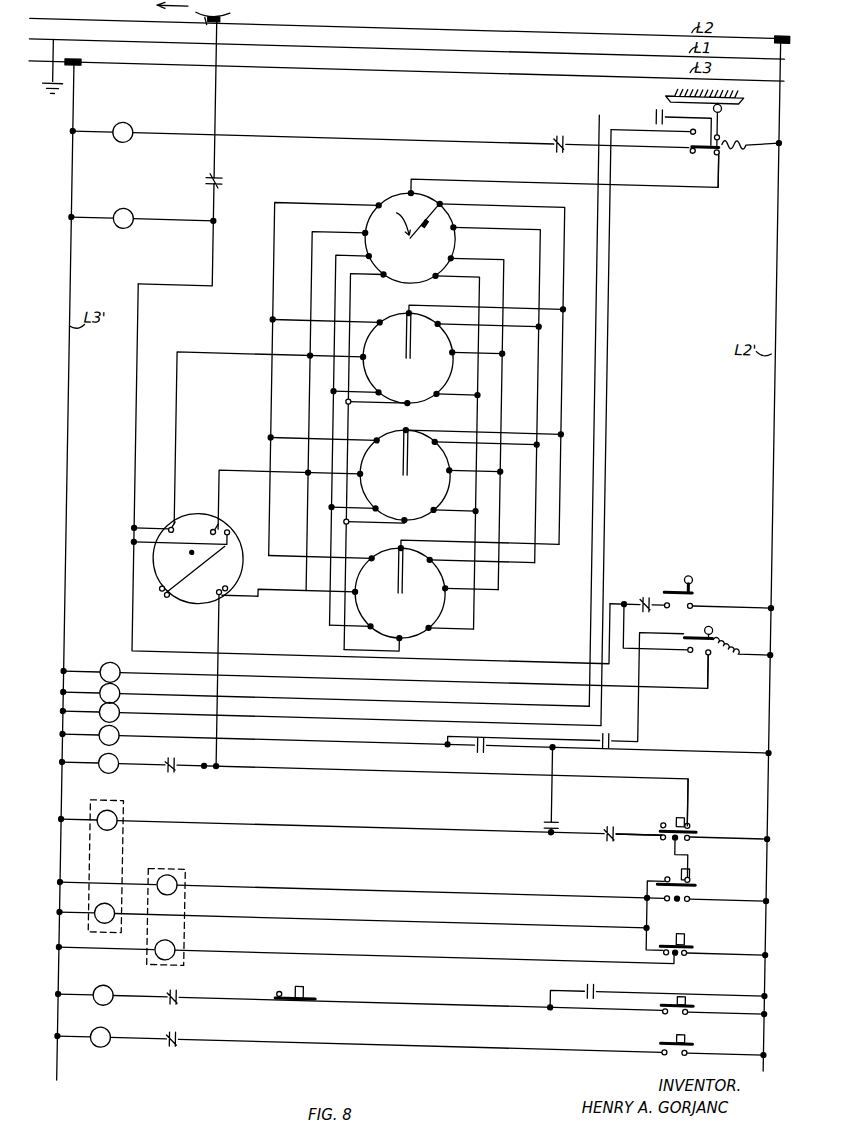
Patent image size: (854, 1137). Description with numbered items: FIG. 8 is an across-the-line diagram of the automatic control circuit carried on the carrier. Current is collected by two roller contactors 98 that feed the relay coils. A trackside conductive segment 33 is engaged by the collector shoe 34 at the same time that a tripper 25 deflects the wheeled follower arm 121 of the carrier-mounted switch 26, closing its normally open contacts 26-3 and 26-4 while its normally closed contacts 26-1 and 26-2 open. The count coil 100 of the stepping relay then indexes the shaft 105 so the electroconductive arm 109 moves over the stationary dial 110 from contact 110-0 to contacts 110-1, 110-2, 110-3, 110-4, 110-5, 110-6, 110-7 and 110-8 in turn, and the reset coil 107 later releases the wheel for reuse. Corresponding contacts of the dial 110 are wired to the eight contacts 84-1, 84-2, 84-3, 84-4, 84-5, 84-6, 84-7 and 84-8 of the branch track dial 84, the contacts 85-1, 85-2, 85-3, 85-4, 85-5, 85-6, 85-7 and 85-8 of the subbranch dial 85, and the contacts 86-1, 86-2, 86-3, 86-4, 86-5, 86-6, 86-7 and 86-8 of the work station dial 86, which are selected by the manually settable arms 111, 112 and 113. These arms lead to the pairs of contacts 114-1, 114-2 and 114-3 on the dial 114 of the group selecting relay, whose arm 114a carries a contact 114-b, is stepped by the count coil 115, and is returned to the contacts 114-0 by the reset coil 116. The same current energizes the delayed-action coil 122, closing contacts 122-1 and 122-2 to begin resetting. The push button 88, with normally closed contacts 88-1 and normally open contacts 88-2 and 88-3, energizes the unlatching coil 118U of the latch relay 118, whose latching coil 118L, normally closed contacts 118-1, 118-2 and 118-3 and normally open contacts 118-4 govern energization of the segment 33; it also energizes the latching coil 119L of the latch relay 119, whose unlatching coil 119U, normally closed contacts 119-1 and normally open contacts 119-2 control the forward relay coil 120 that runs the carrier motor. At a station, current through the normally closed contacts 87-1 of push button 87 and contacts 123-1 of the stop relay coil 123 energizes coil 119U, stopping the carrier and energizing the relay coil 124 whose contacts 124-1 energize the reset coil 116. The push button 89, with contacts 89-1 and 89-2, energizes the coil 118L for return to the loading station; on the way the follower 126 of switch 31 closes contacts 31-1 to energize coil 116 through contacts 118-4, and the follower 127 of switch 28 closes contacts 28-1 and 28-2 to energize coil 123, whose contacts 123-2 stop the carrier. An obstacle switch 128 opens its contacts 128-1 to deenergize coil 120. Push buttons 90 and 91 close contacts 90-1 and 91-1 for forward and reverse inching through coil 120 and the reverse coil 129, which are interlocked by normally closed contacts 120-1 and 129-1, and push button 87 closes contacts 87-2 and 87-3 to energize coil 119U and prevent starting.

The roller contactors 98 is at (82, 60).
The conductive segment 33 is at (200, 16).
The collector shoe 34 is at (226, 19).
The count coil 100 is at (135, 120).
The relay coil 122 is at (137, 222).
The normally closed contacts 118-1 is at (224, 176).
The normally closed contacts 118-3 is at (561, 119).
The stationary dial 110 is at (466, 233).
The electroconductive arm 109 is at (431, 221).
The central shaft 105 is at (394, 223).
The electrical contact 110-0 is at (412, 180).
The electrical contact 110-1 is at (445, 191).
The electrical contact 110-2 is at (461, 212).
The electrical contact 110-3 is at (457, 248).
The electrical contact 110-4 is at (441, 267).
The electrical contact 110-5 is at (388, 267).
The electrical contact 110-6 is at (376, 247).
The electrical contact 110-7 is at (367, 224).
The electrical contact 110-8 is at (375, 198).
The dial 84 is at (439, 387).
The contact arm 111 is at (417, 327).
The electrical contact 84-1 is at (432, 301).
The electrical contact 84-2 is at (446, 314).
The electrical contact 84-3 is at (458, 341).
The electrical contact 84-4 is at (443, 380).
The electrical contact 84-5 is at (416, 393).
The electrical contact 84-6 is at (386, 381).
The electrical contact 84-7 is at (370, 345).
The electrical contact 84-8 is at (386, 314).
The dial 85 is at (437, 511).
The contact arm 112 is at (414, 449).
The electrical contact 85-1 is at (409, 419).
The electrical contact 85-2 is at (442, 430).
The electrical contact 85-3 is at (456, 458).
The electrical contact 85-4 is at (442, 496).
The electrical contact 85-5 is at (398, 513).
The electrical contact 85-6 is at (382, 494).
The electrical contact 85-7 is at (369, 464).
The electrical contact 85-8 is at (384, 432).
The dial 86 is at (442, 623).
The contact arm 113 is at (416, 571).
The electrical contact 86-1 is at (406, 540).
The electrical contact 86-2 is at (439, 547).
The electrical contact 86-3 is at (454, 578).
The electrical contact 86-4 is at (438, 615).
The electrical contact 86-5 is at (412, 632).
The electrical contact 86-6 is at (382, 616).
The electrical contact 86-7 is at (366, 583).
The electrical contact 86-8 is at (382, 550).
The dial 114 is at (212, 506).
The pair of contacts 114-1 is at (176, 519).
The pair of contacts 114-2 is at (228, 521).
The electroconductive arm 114a is at (201, 547).
The contact 114-b is at (193, 572).
The pair of contacts 114-0 is at (176, 588).
The pair of contacts 114-3 is at (235, 588).
The stop relay coil 123 is at (132, 668).
The reset coil 107 is at (131, 690).
The count coil 115 is at (133, 709).
The reset coil 116 is at (133, 732).
The relay coil 124 is at (131, 768).
The normally open contacts 124-1 is at (495, 741).
The normally open contacts 118-4 is at (618, 718).
The normally closed contacts 119-1 is at (170, 749).
The normally open contacts 123-2 is at (557, 790).
The normally closed contacts 123-1 is at (618, 808).
The unlatching coil 119U is at (132, 815).
The latch type relay 119 is at (132, 850).
The latching coil 119L is at (110, 910).
The unlatching coil 118U is at (191, 874).
The latch type relay 118 is at (203, 907).
The latching coil 118L is at (192, 941).
The push button 87 is at (688, 799).
The normally closed contacts 87-1 is at (703, 804).
The normally open contacts 87-2 is at (674, 822).
The normally open contacts 87-3 is at (711, 821).
The push button 88 is at (704, 857).
The normally closed contacts 88-1 is at (662, 862).
The normally open contacts 88-2 is at (665, 883).
The normally open contacts 88-3 is at (706, 882).
The push button 89 is at (702, 921).
The normally open contacts 89-1 is at (706, 938).
The normally open contacts 89-2 is at (668, 938).
The motor control forward relay coil 120 is at (126, 991).
The normally closed contacts 129-1 is at (200, 990).
The switch 128 is at (318, 985).
The normally closed contacts 128-1 is at (296, 985).
The normally open contacts 119-2 is at (593, 970).
The push button 90 is at (680, 988).
The contacts 90-1 is at (704, 995).
The relay coil 129 is at (124, 1032).
The normally closed contacts 120-1 is at (200, 1030).
The push button 91 is at (680, 1024).
The contacts 91-1 is at (676, 1036).
The tripper 25 is at (668, 82).
The wheeled follower arm 121 is at (715, 95).
The normally open contacts 122-1 is at (662, 99).
The normally open contacts 122-2 is at (670, 128).
The switch 26 is at (738, 98).
The normally closed contacts 26-1 is at (692, 136).
The normally closed contacts 26-2 is at (738, 116).
The normally open contacts 26-3 is at (724, 156).
The normally open contacts 26-4 is at (742, 132).
The normally closed contacts 118-2 is at (653, 580).
The follower 126 is at (695, 558).
The switch 31 is at (708, 567).
The contacts 31-1 is at (704, 585).
The follower 127 is at (715, 613).
The switch 28 is at (730, 617).
The normally open contacts 28-1 is at (724, 637).
The normally open contacts 28-2 is at (703, 634).